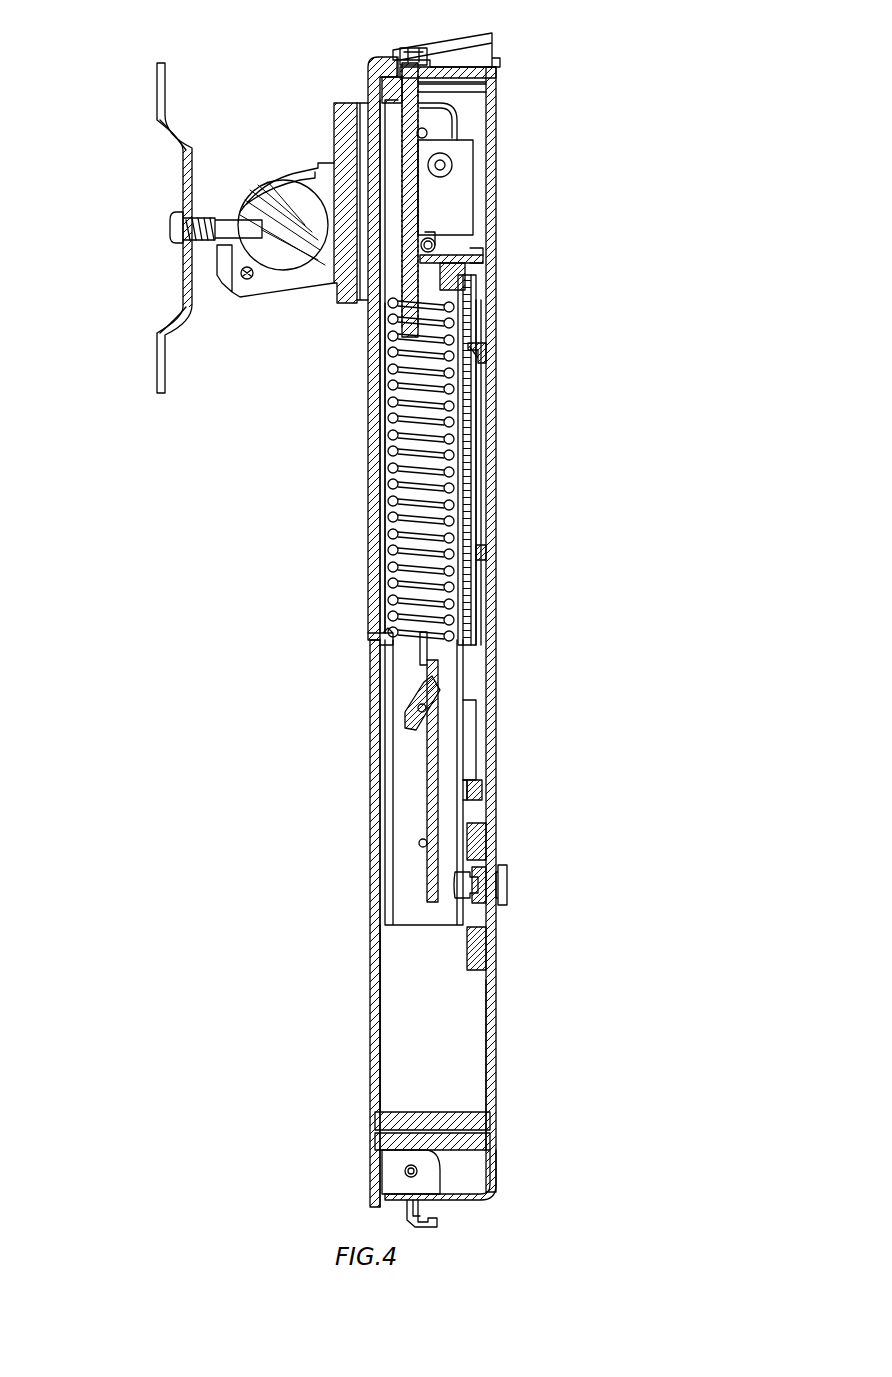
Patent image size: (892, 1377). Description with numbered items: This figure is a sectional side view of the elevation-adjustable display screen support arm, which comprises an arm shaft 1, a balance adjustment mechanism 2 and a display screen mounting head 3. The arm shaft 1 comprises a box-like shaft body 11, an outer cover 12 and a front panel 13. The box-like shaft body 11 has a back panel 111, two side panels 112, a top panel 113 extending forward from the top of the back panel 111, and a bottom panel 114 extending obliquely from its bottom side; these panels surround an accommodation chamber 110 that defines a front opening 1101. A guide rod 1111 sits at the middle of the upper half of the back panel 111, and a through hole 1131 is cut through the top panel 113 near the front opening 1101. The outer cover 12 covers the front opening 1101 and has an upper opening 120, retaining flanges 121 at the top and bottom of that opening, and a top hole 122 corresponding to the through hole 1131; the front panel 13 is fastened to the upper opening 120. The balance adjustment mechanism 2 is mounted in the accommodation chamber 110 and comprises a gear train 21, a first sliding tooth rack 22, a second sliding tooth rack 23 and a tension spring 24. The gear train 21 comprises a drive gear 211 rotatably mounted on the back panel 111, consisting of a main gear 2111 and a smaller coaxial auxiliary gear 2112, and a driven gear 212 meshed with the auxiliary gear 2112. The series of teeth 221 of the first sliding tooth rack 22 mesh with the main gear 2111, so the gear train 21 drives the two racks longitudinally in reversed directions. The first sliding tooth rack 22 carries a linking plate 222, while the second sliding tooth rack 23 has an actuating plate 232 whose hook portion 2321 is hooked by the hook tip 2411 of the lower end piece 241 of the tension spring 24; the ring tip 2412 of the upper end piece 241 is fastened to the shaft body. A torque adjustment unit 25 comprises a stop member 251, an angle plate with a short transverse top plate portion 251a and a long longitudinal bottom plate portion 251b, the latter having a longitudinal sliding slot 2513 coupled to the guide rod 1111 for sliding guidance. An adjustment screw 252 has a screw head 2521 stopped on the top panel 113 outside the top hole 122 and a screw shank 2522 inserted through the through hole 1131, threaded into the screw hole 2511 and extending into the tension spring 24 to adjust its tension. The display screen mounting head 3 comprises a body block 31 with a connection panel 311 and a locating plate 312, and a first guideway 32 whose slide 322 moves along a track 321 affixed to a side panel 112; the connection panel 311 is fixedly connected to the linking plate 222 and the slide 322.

The arm shaft 1 is at (474, 619).
The box-like shaft body 11 is at (598, 1025).
The accommodation chamber 110 is at (410, 978).
The front opening 1101 is at (393, 1036).
The back panel 111 is at (494, 376).
The guide rod 1111 is at (488, 352).
The side panels 112 is at (455, 1050).
The top panel 113 is at (466, 72).
The through hole 1131 is at (430, 62).
The bottom panel 114 is at (443, 1196).
The outer cover 12 is at (331, 363).
The upper opening 120 is at (383, 556).
The retaining flanges 121 is at (378, 618).
The top hole 122 is at (420, 52).
The front panel 13 is at (373, 127).
The balance adjustment mechanism 2 is at (512, 878).
The gear train 21 is at (576, 948).
The drive gear 211 is at (587, 820).
The main gear 2111 is at (482, 840).
The auxiliary gear 2112 is at (480, 800).
The driven gear 212 is at (480, 956).
The first sliding tooth rack 22 is at (551, 373).
The series of teeth 221 is at (484, 636).
The linking plate 222 is at (450, 190).
The second sliding tooth rack 23 is at (545, 734).
The actuating plate 232 is at (438, 760).
The hook portion 2321 is at (416, 725).
The tension spring 24 is at (440, 462).
The end pieces 241 is at (571, 767).
The hook tip 2411 is at (424, 708).
The ring tip 2412 is at (430, 250).
The torque adjustment unit 25 is at (573, 400).
The stop member 251 is at (573, 400).
The short transverse top plate portion 251a is at (482, 262).
The long longitudinal bottom plate portion 251b is at (481, 556).
The screw hole 2511 is at (428, 266).
The longitudinal sliding slot 2513 is at (480, 515).
The adjustment screw 252 is at (295, 184).
The screw head 2521 is at (430, 52).
The screw shank 2522 is at (405, 80).
The display screen mounting head 3 is at (216, 220).
The body block 31 is at (269, 203).
The connection panel 311 is at (355, 146).
The locating plate 312 is at (163, 76).
The first guideway 32 is at (321, 614).
The track 321 is at (410, 822).
The slide 322 is at (418, 496).